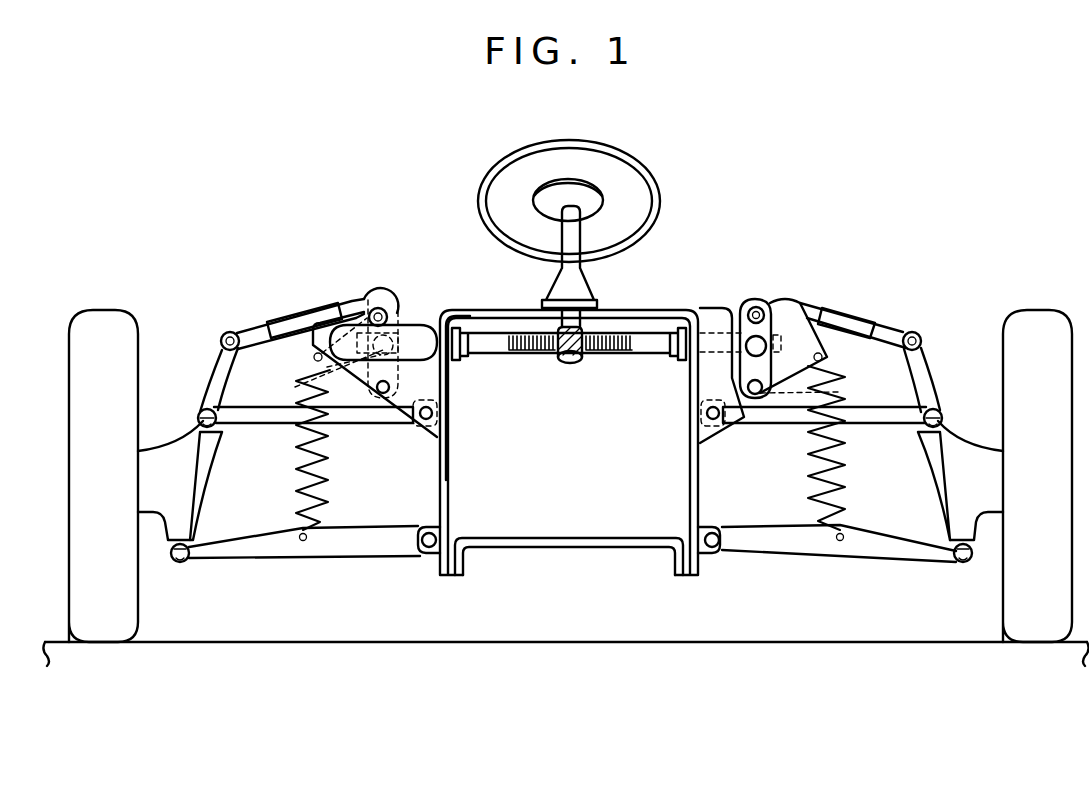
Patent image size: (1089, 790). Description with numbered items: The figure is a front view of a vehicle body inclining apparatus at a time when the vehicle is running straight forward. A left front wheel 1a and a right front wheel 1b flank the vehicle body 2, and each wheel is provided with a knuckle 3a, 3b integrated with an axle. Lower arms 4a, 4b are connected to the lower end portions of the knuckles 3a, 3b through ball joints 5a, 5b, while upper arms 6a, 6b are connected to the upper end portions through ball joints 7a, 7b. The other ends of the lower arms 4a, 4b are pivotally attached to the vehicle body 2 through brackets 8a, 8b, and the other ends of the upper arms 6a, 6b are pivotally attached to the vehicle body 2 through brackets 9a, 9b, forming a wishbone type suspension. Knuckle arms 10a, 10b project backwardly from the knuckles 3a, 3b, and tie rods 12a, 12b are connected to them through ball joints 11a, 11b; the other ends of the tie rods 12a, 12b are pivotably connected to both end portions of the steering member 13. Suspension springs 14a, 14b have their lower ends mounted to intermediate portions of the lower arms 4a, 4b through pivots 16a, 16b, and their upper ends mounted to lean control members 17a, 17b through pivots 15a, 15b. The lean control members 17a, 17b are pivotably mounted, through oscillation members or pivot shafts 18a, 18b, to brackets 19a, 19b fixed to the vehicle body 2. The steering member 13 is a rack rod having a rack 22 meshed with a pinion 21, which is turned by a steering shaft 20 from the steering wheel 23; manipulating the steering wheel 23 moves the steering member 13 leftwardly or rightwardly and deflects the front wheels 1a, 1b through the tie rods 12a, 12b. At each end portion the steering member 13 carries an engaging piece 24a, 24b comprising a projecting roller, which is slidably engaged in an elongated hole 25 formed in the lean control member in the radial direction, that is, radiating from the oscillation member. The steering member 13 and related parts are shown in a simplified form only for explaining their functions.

The left front wheel 1a is at (1043, 637).
The right front wheel 1b is at (110, 634).
The vehicle body 2 is at (632, 307).
The knuckle 3a is at (946, 485).
The knuckle 3b is at (194, 484).
The lower arm 4a is at (793, 545).
The lower arm 4b is at (364, 545).
The ball joint 5a is at (962, 562).
The ball joint 5b is at (181, 562).
The upper arm 6a is at (884, 424).
The upper arm 6b is at (357, 424).
The ball joint 7a is at (935, 411).
The ball joint 7b is at (200, 410).
The bracket 8a is at (714, 548).
The bracket 8b is at (429, 548).
The bracket 9a is at (714, 428).
The bracket 9b is at (423, 428).
The knuckle arm 10a is at (920, 370).
The knuckle arm 10b is at (217, 367).
The ball joint 11a is at (913, 338).
The ball joint 11b is at (228, 338).
The tie rod 12a is at (858, 318).
The tie rod 12b is at (297, 316).
The steering member 13 is at (651, 353).
The suspension spring 14a is at (811, 481).
The suspension spring 14b is at (299, 439).
The pivot 15a is at (822, 357).
The pivot 15b is at (314, 357).
The pivot 16a is at (842, 541).
The pivot 16b is at (303, 541).
The lean control member 17a is at (798, 334).
The lean control member 17b is at (398, 330).
The oscillation member 18a is at (757, 394).
The oscillation member 18b is at (383, 392).
The bracket 19a is at (712, 318).
The bracket 19b is at (437, 318).
The steering shaft 20 is at (568, 267).
The pinion 21 is at (568, 359).
The rack 22 is at (601, 353).
The steering wheel 23 is at (643, 172).
The engaging piece 24a is at (750, 312).
The engaging piece 24b is at (378, 310).
The elongated hole 25 is at (305, 379).